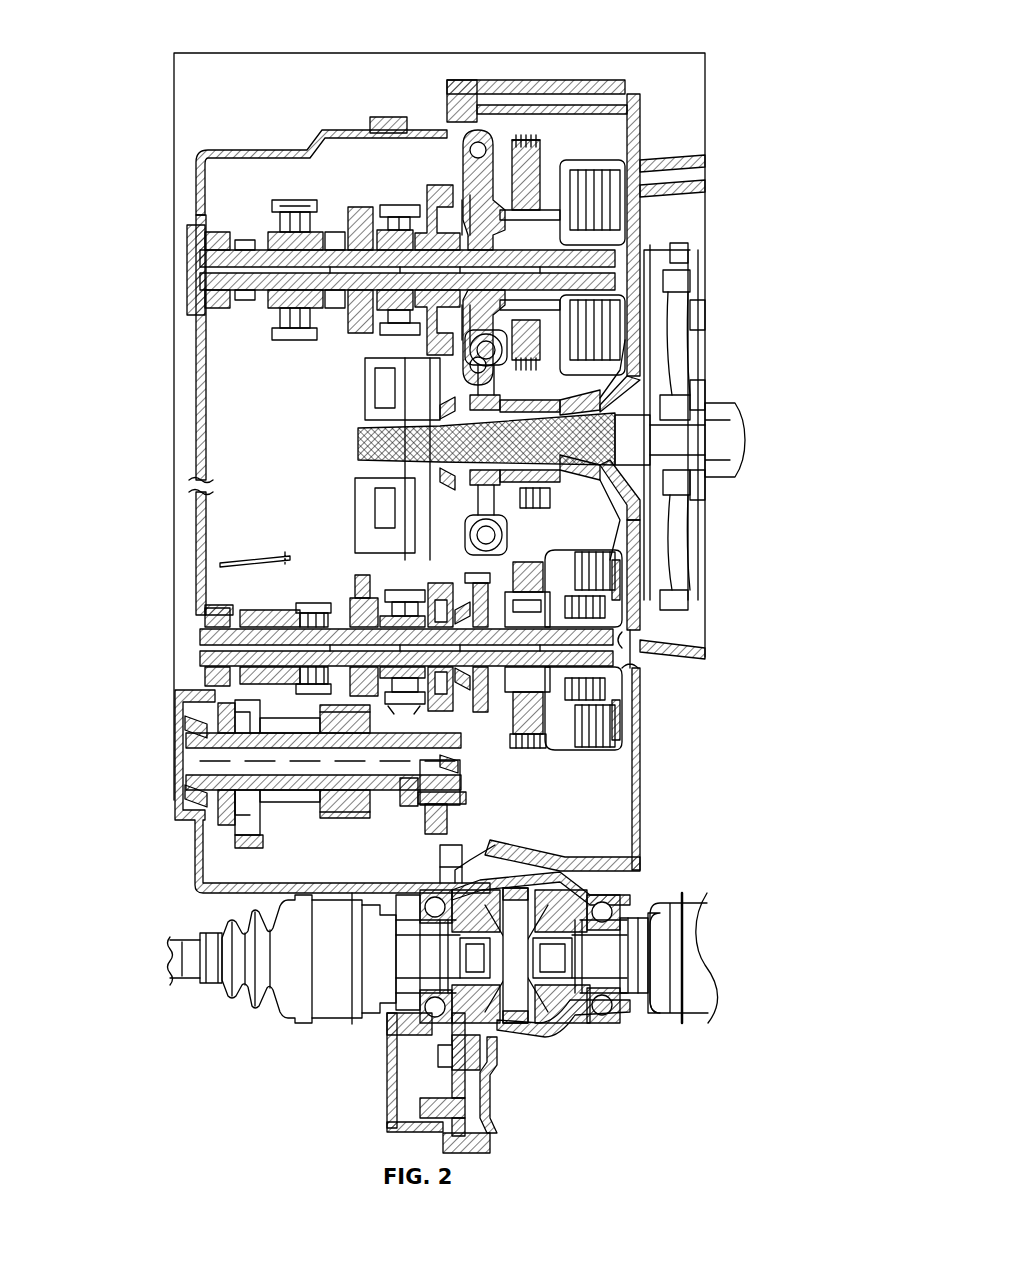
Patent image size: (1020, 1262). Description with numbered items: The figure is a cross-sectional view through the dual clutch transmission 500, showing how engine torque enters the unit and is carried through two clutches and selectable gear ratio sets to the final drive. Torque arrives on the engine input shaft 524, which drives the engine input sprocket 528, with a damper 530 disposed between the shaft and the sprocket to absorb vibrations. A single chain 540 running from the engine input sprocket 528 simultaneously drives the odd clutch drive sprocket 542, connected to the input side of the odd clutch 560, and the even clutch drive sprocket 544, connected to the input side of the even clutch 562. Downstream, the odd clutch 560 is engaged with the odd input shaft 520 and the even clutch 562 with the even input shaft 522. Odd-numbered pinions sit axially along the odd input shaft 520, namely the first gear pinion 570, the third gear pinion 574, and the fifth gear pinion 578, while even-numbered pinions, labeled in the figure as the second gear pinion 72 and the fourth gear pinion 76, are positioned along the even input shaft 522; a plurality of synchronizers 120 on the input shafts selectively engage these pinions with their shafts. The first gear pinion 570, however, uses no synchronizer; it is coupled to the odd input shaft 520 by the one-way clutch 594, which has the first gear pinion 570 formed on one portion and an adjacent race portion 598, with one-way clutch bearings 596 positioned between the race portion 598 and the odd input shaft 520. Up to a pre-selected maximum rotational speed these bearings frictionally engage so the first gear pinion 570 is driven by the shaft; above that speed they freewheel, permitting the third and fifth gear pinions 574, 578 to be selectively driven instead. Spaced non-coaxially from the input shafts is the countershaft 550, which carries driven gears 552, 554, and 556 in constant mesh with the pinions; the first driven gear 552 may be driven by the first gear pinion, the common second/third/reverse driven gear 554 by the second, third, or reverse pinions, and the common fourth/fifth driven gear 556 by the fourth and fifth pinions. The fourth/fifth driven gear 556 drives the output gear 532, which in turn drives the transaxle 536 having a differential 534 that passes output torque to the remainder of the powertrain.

The dual clutch transmission 500 is at (142, 60).
The chain 540 is at (518, 140).
The even clutch 562 is at (622, 175).
The synchronizer 120 is at (283, 197).
The gear 72 is at (358, 205).
The gear 76 is at (440, 185).
The even clutch drive sprocket 544 is at (540, 172).
The even input shaft 522 is at (200, 262).
The damper 530 is at (580, 322).
The engine input sprocket 528 is at (560, 345).
The engine input shaft 524 is at (358, 428).
The fifth gear pinion 578 is at (395, 575).
The one-way clutch 594 is at (288, 592).
The race portion 598 is at (300, 598).
The third gear pinion 574 is at (358, 592).
The first gear pinion 570 is at (250, 605).
The one-way clutch bearings 596 is at (320, 603).
The odd input shaft 520 is at (200, 660).
The countershaft 550 is at (182, 790).
The first driven gear 552 is at (235, 840).
The second/third/reverse driven gear 554 is at (330, 820).
The fourth/fifth driven gear 556 is at (422, 812).
The output gear 532 is at (488, 865).
The odd clutch drive sprocket 542 is at (545, 750).
The odd clutch 560 is at (600, 752).
The differential 534 is at (563, 1022).
The transaxle 536 is at (526, 1060).